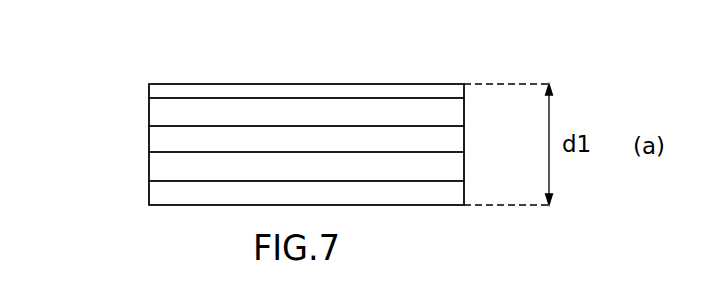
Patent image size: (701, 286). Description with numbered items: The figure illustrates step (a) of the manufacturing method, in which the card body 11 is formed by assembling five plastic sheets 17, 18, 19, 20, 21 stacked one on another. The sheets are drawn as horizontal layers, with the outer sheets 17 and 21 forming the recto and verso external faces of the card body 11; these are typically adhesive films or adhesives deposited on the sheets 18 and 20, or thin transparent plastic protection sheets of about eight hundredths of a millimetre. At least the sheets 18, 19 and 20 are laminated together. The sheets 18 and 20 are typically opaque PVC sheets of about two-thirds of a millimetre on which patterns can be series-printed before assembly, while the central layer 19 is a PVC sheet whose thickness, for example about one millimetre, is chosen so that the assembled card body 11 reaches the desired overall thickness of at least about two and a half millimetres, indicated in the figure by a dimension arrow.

The card body 11 is at (458, 85).
The sheet 17 is at (165, 93).
The sheet 18 is at (156, 116).
The central layer 19 is at (157, 143).
The sheet 20 is at (155, 170).
The sheet 21 is at (160, 198).